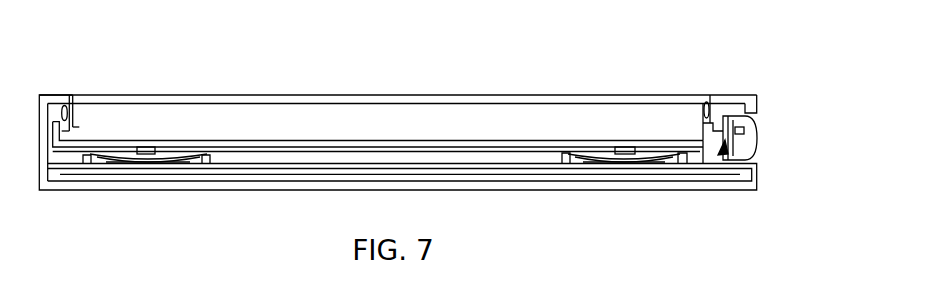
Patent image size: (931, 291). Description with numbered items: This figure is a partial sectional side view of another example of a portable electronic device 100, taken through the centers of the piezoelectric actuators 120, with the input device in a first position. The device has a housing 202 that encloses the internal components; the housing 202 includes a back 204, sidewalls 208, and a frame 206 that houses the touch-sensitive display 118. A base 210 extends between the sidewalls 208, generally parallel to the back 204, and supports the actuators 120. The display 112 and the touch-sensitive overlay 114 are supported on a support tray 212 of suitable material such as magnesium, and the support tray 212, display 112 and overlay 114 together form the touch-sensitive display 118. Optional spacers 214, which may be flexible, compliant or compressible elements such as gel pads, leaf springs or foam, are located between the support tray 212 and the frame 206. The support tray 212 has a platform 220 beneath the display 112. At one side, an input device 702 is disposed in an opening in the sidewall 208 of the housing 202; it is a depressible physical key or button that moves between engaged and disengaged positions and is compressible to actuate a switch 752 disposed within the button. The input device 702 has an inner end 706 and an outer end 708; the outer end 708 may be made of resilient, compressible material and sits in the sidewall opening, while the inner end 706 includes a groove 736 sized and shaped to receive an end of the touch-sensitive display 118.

The portable electronic device 100 is at (435, 25).
The display 112 is at (277, 118).
The touch-sensitive overlay 114 is at (340, 101).
The touch-sensitive display 118 is at (238, 99).
The actuators 120 is at (160, 154).
The housing 202 is at (540, 190).
The back 204 is at (481, 184).
The frame 206 is at (48, 101).
The sidewalls 208 is at (749, 185).
The base 210 is at (408, 168).
The support tray 212 is at (352, 148).
The spacers 214 is at (707, 97).
The platform 220 is at (698, 150).
The input device 702 is at (748, 121).
The inner end 706 is at (730, 147).
The outer end 708 is at (754, 155).
The groove 736 is at (723, 150).
The switch 752 is at (741, 131).